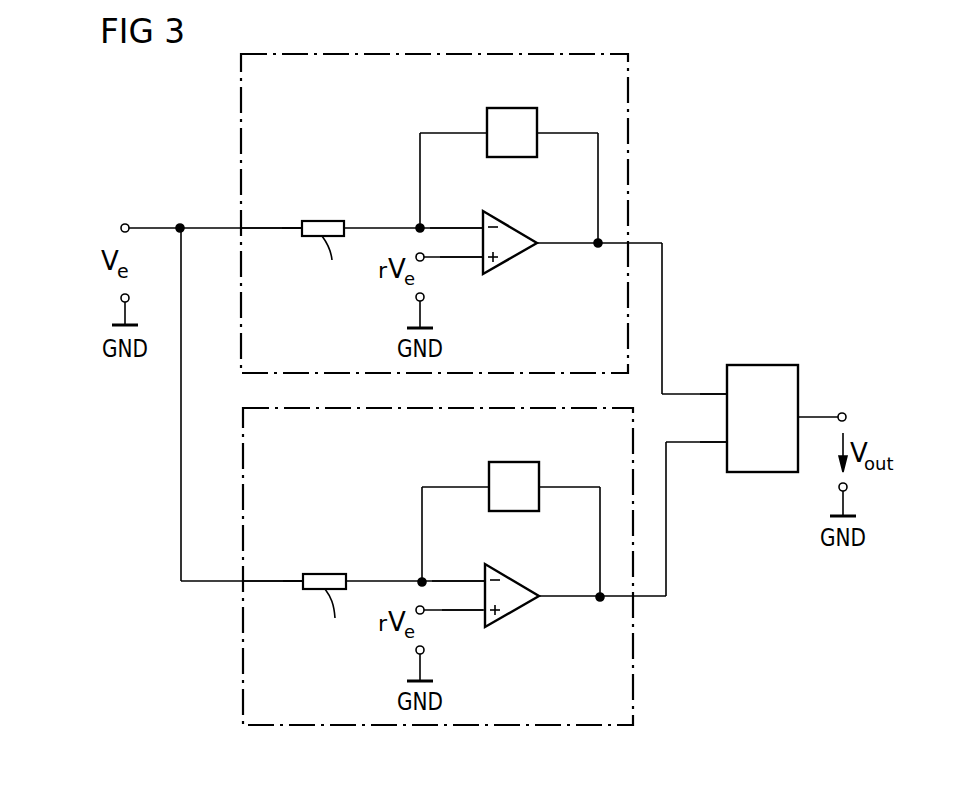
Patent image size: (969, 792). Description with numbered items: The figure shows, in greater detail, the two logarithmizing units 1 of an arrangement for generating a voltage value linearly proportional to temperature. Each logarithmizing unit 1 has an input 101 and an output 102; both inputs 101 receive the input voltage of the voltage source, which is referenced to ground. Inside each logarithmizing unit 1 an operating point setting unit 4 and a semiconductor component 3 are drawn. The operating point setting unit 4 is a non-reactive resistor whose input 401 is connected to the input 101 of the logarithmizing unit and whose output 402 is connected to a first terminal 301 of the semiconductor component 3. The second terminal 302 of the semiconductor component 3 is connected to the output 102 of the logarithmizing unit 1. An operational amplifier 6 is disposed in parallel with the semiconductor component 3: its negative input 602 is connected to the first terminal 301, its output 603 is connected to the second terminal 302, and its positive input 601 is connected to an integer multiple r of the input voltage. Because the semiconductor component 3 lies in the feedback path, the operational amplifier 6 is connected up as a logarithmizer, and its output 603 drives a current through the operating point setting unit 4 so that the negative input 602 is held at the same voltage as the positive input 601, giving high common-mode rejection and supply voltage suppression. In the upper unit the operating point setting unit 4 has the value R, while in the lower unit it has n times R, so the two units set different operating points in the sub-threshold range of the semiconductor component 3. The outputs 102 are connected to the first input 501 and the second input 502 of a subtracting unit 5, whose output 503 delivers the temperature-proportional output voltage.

The logarithmizing unit 1 is at (241, 140).
The semiconductor component 3 is at (507, 157).
The operating point setting unit 4 is at (322, 221).
The subtracting unit 5 is at (761, 365).
The operational amplifier 6 is at (512, 268).
The input of logarithmizing unit 101 is at (241, 228).
The output of logarithmizing unit 102 is at (641, 243).
The first terminal of semiconductor component 301 is at (457, 133).
The second terminal of semiconductor component 302 is at (565, 133).
The input of operating point setting unit 401 is at (296, 226).
The output of operating point setting unit 402 is at (357, 226).
The first input of subtracting unit 501 is at (727, 393).
The second input of subtracting unit 502 is at (727, 443).
The output of subtracting unit 503 is at (800, 416).
The positive input of operational amplifier 601 is at (456, 258).
The negative input of operational amplifier 602 is at (451, 227).
The output of operational amplifier 603 is at (551, 243).